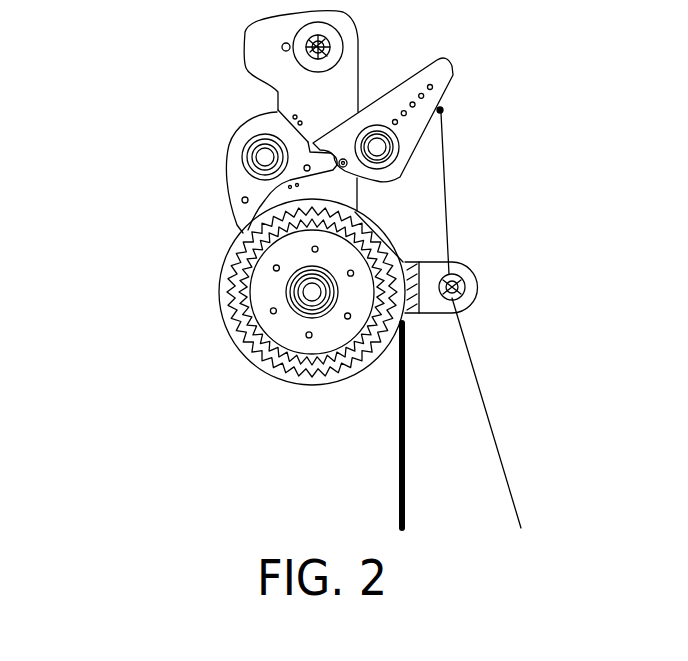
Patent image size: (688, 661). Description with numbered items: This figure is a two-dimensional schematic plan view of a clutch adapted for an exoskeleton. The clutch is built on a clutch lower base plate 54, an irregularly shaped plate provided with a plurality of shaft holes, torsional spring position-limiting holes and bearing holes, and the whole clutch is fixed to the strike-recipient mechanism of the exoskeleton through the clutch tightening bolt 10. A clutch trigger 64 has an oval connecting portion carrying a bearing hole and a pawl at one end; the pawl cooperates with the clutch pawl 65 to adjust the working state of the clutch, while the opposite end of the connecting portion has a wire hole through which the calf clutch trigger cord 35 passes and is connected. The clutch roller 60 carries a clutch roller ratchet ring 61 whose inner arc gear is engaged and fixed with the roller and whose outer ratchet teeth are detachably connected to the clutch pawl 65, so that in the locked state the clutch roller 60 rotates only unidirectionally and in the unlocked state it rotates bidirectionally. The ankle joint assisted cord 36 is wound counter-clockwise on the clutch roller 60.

The clutch tightening bolt 10 is at (325, 31).
The clutch lower base plate 54 is at (280, 97).
The clutch trigger 64 is at (405, 125).
The clutch pawl 65 is at (255, 176).
The clutch roller ratchet ring 61 is at (221, 281).
The clutch roller 60 is at (357, 288).
The ankle joint assisted cord 36 is at (400, 395).
The calf clutch trigger cord 35 is at (487, 418).